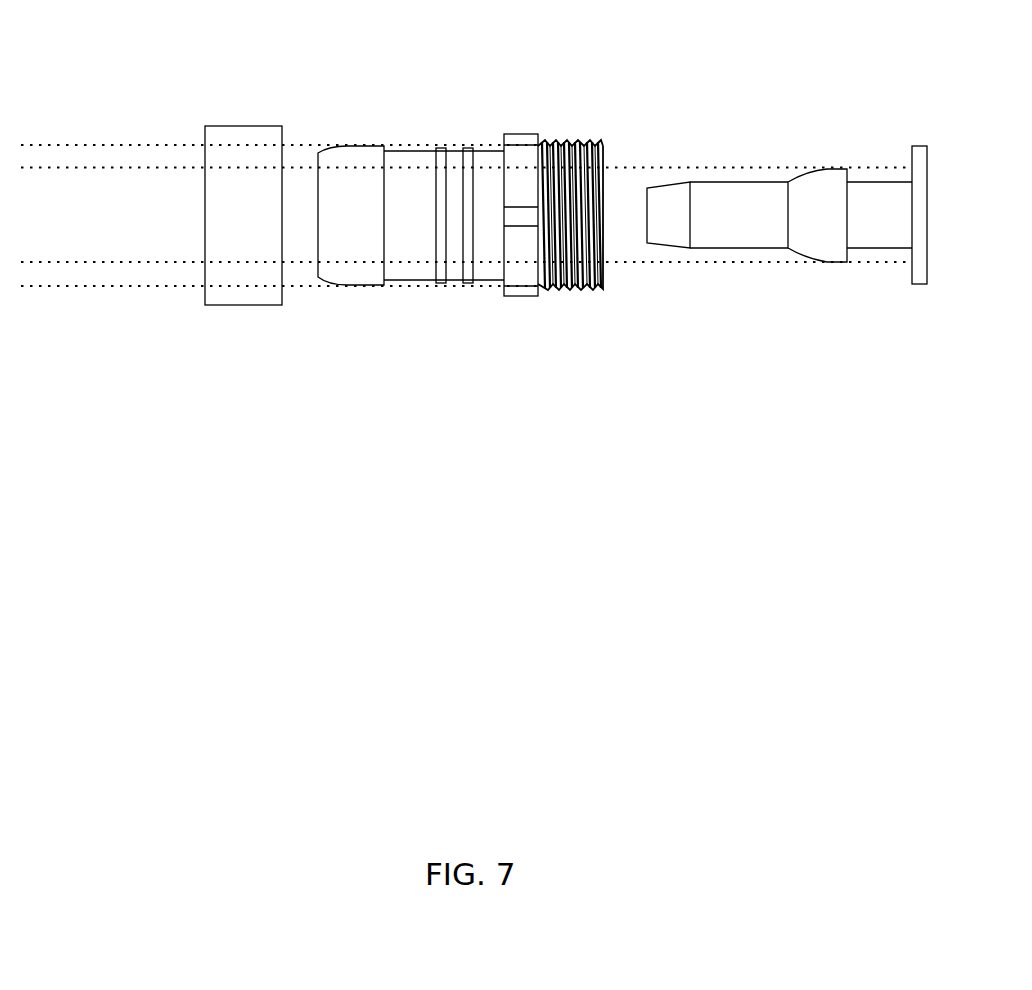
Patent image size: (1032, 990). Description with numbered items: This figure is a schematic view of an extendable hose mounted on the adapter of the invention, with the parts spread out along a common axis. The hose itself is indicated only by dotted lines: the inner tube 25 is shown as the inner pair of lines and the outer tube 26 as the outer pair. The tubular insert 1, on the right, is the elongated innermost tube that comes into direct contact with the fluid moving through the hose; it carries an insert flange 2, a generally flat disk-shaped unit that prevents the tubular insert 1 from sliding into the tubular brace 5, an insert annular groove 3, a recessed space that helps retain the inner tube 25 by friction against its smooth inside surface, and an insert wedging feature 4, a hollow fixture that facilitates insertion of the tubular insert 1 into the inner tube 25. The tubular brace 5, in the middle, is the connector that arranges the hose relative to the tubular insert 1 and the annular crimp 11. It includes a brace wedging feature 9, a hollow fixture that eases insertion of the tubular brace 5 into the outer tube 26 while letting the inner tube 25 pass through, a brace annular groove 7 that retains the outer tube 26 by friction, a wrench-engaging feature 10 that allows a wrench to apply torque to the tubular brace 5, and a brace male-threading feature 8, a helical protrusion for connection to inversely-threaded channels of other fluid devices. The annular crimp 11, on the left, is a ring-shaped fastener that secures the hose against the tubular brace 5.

The tubular insert 1 is at (808, 349).
The insert flange 2 is at (915, 155).
The insert annular groove 3 is at (872, 195).
The insert wedging feature 4 is at (670, 198).
The tubular brace 5 is at (427, 97).
The brace annular groove 7 is at (457, 272).
The brace male-threading feature 8 is at (578, 287).
The brace wedging feature 9 is at (338, 273).
The wrench-engaging feature 10 is at (520, 153).
The annular crimp 11 is at (242, 112).
The inner tube 25 is at (68, 170).
The outer tube 26 is at (78, 145).